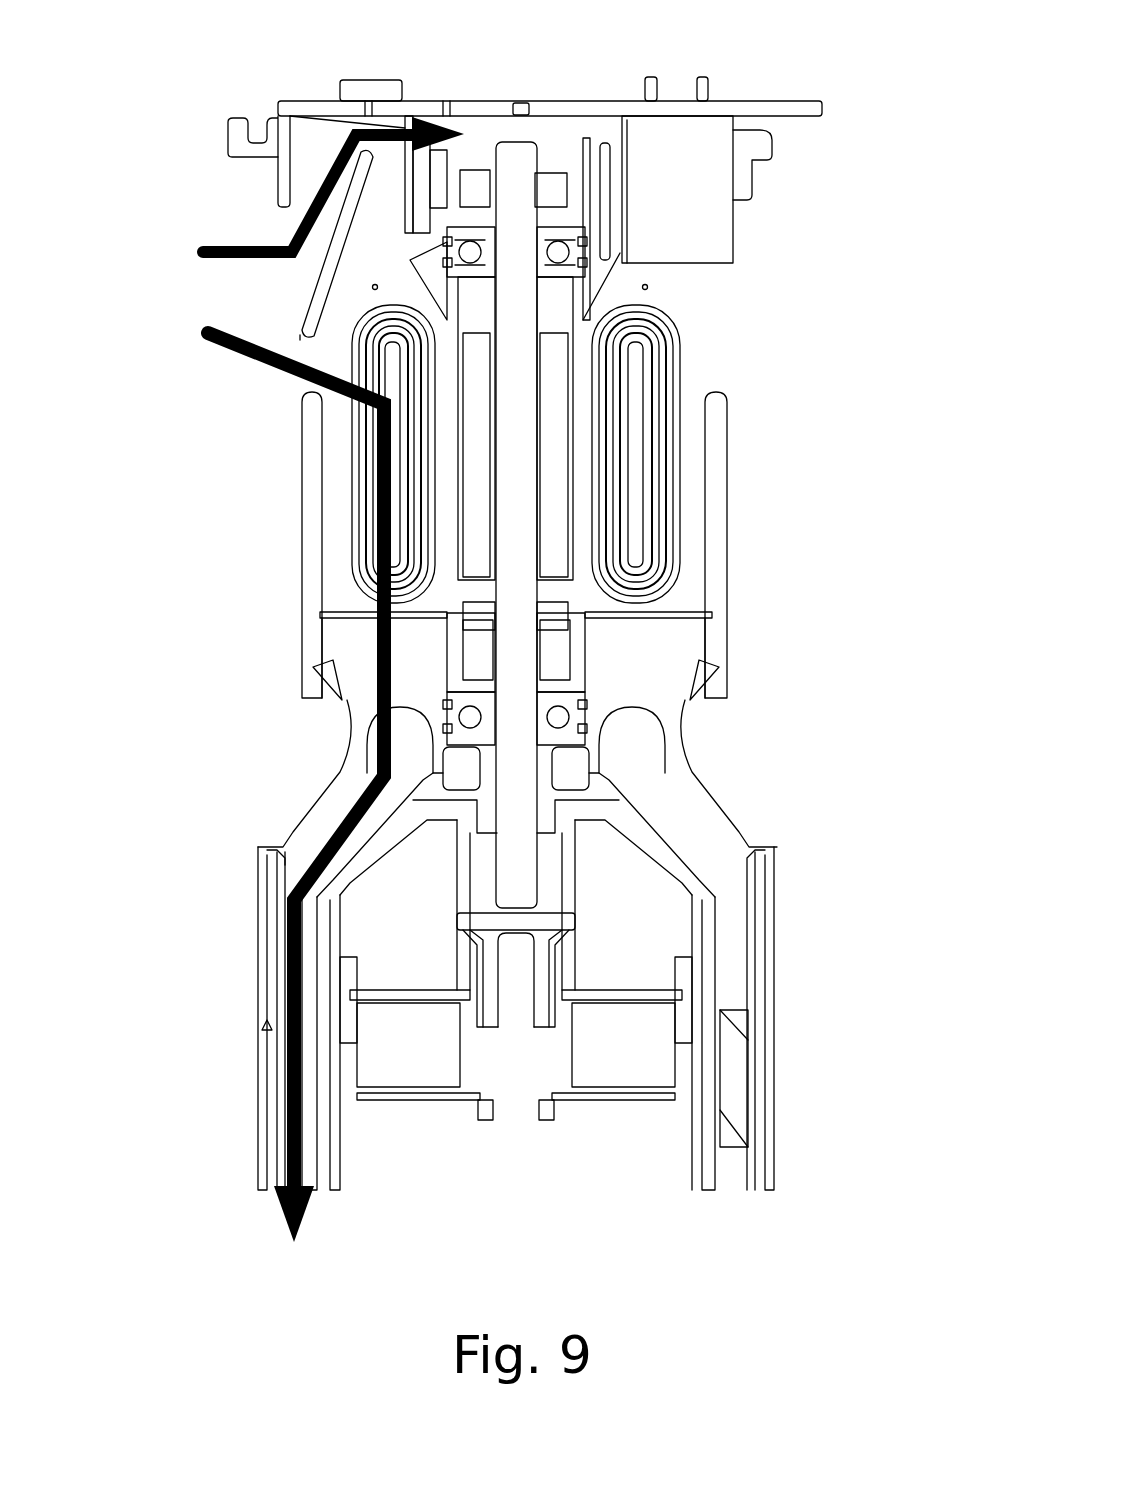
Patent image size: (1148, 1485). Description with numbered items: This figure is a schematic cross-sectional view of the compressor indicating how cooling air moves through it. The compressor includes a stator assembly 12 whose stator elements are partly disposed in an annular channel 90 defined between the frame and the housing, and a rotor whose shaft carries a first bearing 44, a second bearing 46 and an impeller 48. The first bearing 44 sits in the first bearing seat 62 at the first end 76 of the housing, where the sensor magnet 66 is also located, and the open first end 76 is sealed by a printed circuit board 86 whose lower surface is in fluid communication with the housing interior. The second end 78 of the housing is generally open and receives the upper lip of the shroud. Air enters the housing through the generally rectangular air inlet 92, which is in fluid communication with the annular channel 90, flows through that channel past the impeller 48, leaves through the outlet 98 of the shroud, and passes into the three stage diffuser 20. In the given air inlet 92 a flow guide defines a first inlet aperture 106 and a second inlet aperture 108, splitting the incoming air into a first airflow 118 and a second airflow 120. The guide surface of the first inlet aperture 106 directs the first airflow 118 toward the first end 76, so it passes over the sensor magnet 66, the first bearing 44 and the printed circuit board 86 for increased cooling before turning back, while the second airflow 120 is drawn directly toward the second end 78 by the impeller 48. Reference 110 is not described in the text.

The stator assembly 12 is at (365, 568).
The diffuser 20 is at (239, 1011).
The first bearing 44 is at (575, 233).
The second bearing 46 is at (585, 720).
The impeller 48 is at (643, 816).
The first bearing seat 62 is at (600, 288).
The sensor magnet 66 is at (549, 172).
The first end of the housing 76 is at (296, 125).
The second end of the housing 78 is at (326, 658).
The printed circuit board 86 is at (475, 112).
The annular channel 90 is at (331, 470).
The air inlet 92 is at (714, 318).
The outlet of the shroud 98 is at (281, 876).
The first inlet aperture 106 is at (317, 281).
The second inlet aperture 108 is at (274, 232).
The cooling air flow path 110 is at (283, 385).
The first airflow 118 is at (322, 180).
The second airflow 120 is at (380, 519).